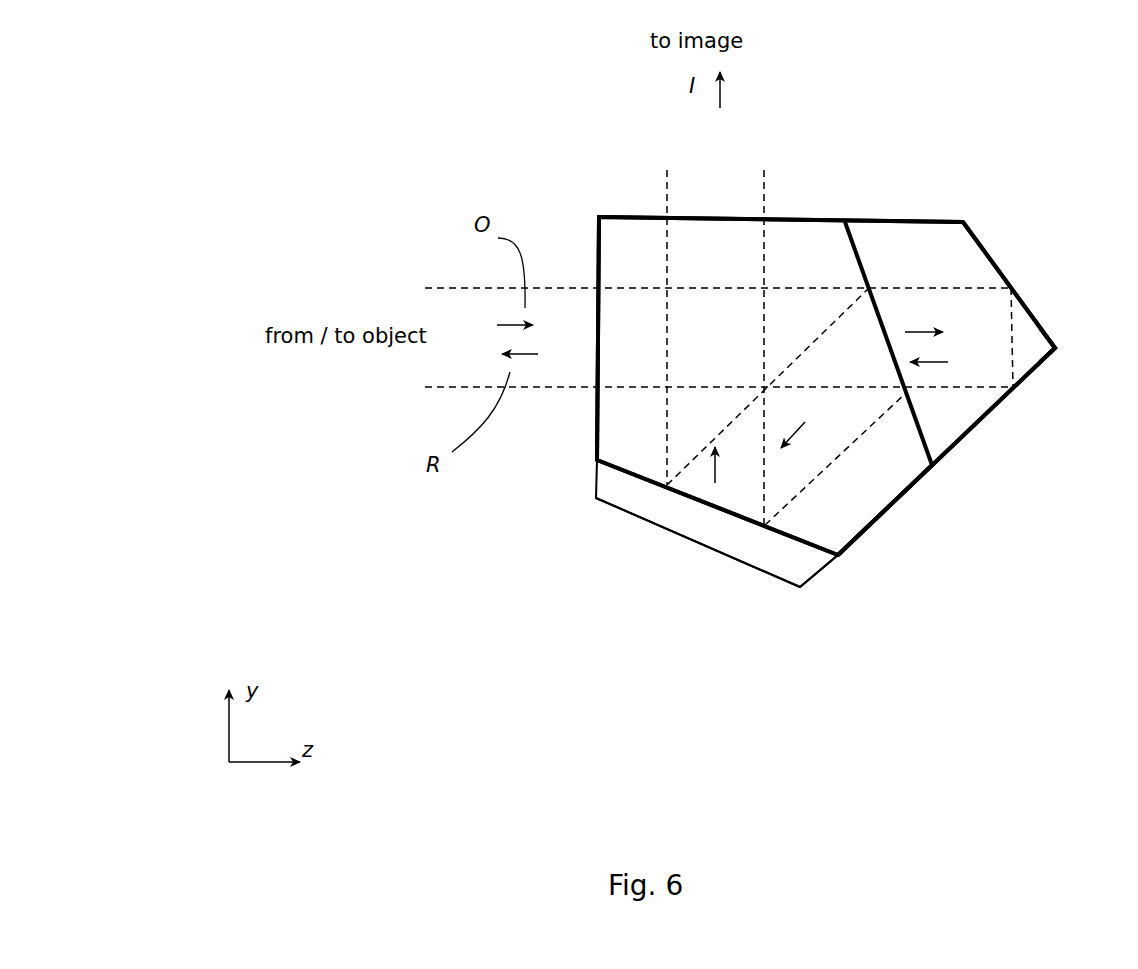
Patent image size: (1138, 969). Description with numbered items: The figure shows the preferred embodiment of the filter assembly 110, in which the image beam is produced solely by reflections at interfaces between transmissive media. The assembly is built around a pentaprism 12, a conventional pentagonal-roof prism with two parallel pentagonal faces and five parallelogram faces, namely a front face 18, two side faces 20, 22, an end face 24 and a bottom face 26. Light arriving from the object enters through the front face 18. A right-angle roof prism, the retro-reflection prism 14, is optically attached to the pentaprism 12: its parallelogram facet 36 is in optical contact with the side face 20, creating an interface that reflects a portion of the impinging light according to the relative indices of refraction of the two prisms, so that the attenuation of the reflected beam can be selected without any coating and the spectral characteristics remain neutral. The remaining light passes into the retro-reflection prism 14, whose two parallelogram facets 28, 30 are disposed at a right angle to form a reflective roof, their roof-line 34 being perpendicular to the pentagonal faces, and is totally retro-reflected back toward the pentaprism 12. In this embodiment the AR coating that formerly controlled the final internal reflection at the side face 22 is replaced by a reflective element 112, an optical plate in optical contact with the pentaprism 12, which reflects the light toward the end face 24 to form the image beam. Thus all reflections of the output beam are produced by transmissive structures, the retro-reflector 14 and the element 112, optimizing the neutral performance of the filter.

The filter assembly 110 is at (585, 130).
The second prism component 14 is at (948, 243).
The front face 18 is at (588, 438).
The side face 20 is at (860, 257).
The side face 22 is at (627, 473).
The end face 24 is at (792, 213).
The bottom face 26 is at (888, 517).
The parallelogram facet 28 is at (978, 422).
The parallelogram facet 30 is at (1027, 297).
The roof-line 34 is at (1062, 349).
The parallelogram facet 36 is at (917, 433).
The first prism component 12 is at (840, 523).
The reflective element 112 is at (708, 531).